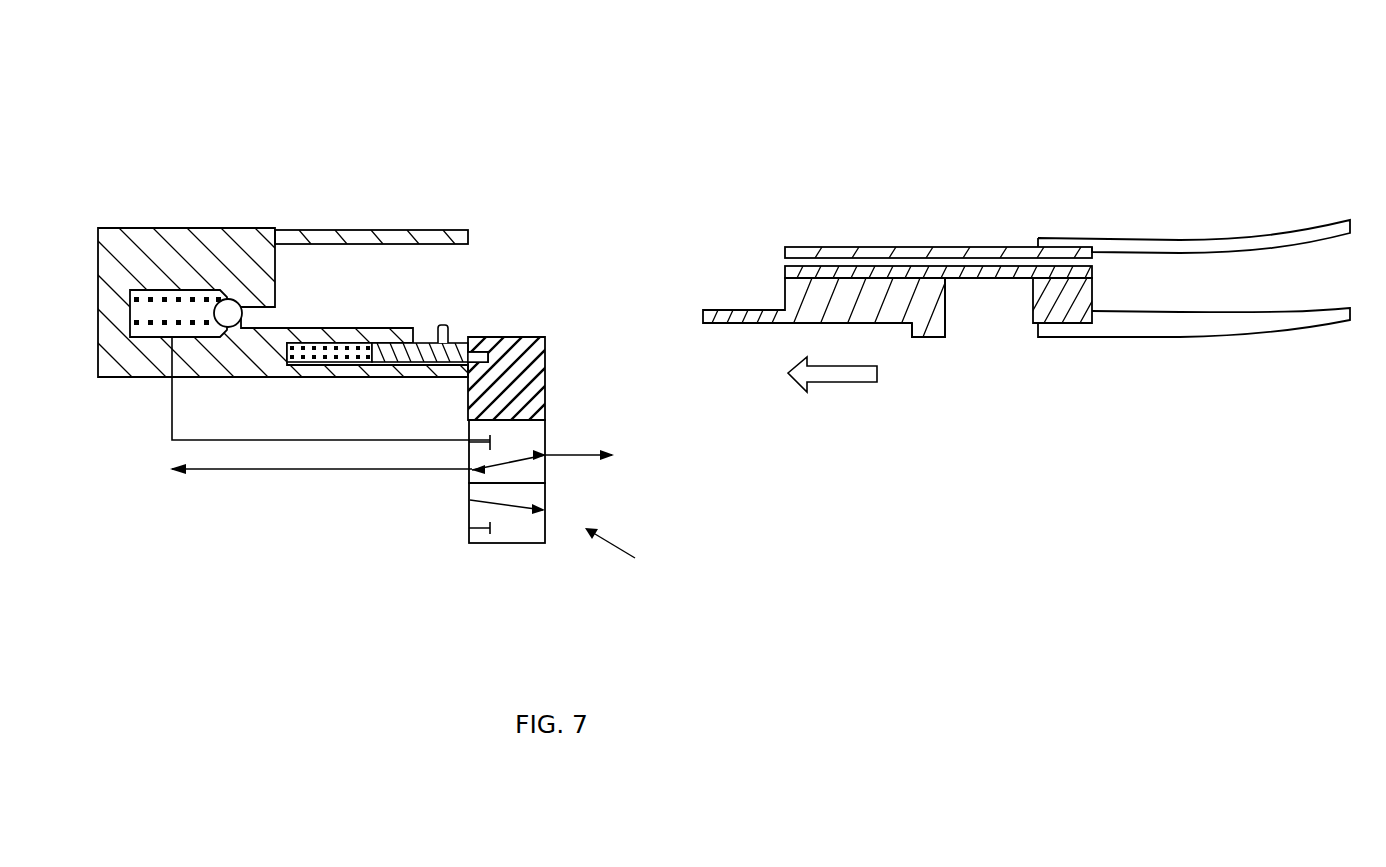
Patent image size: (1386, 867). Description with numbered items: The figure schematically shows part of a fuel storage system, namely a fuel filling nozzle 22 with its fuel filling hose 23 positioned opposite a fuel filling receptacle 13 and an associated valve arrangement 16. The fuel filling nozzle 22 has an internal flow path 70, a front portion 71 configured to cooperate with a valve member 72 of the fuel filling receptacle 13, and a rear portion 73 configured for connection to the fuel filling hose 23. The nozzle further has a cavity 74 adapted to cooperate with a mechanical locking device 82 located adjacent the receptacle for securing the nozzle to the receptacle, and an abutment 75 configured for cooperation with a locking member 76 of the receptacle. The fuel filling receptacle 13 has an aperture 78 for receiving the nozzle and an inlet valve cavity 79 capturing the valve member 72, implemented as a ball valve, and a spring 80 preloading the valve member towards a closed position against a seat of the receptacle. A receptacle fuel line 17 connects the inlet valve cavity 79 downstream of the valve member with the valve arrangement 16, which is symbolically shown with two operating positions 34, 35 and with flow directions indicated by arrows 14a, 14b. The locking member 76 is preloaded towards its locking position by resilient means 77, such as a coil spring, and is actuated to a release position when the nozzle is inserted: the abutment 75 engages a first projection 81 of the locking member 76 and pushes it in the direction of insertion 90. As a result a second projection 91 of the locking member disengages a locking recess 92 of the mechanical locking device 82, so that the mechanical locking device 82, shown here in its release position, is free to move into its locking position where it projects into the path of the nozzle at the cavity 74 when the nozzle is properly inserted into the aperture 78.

The fuel filling receptacle 13 is at (172, 248).
The spring 80 is at (180, 302).
The inlet valve cavity 79 is at (203, 308).
The valve member 72 is at (230, 313).
The aperture 78 is at (312, 263).
The resilient means 77 is at (342, 358).
The locking member 76 is at (412, 355).
The first projection 81 is at (443, 328).
The mechanical locking device 82 is at (543, 370).
The second projection 91 is at (477, 333).
The locking recess 92 is at (495, 335).
The operating position 34 is at (530, 435).
The operating position 35 is at (510, 537).
The receptacle fuel line 17 is at (188, 440).
The first direction 14a is at (240, 470).
The second direction 14b is at (582, 456).
The valve arrangement 16 is at (630, 563).
The front portion 71 is at (735, 315).
The fuel filling nozzle 22 is at (805, 278).
The internal flow path 70 is at (853, 262).
The fuel filling hose 23 is at (1050, 242).
The cavity 74 is at (988, 310).
The abutment 75 is at (937, 333).
The rear portion 73 is at (1068, 303).
The direction of insertion 90 is at (847, 373).